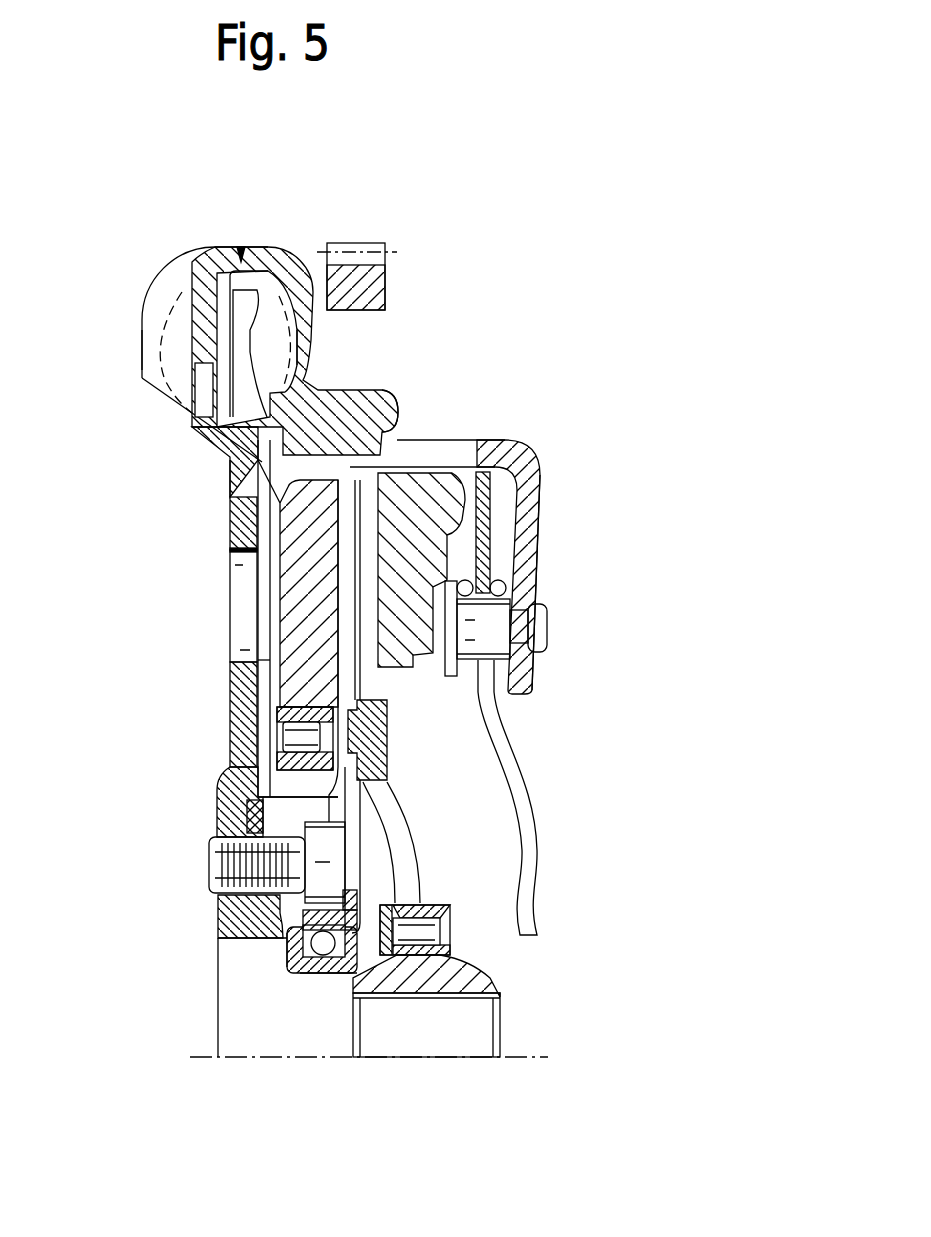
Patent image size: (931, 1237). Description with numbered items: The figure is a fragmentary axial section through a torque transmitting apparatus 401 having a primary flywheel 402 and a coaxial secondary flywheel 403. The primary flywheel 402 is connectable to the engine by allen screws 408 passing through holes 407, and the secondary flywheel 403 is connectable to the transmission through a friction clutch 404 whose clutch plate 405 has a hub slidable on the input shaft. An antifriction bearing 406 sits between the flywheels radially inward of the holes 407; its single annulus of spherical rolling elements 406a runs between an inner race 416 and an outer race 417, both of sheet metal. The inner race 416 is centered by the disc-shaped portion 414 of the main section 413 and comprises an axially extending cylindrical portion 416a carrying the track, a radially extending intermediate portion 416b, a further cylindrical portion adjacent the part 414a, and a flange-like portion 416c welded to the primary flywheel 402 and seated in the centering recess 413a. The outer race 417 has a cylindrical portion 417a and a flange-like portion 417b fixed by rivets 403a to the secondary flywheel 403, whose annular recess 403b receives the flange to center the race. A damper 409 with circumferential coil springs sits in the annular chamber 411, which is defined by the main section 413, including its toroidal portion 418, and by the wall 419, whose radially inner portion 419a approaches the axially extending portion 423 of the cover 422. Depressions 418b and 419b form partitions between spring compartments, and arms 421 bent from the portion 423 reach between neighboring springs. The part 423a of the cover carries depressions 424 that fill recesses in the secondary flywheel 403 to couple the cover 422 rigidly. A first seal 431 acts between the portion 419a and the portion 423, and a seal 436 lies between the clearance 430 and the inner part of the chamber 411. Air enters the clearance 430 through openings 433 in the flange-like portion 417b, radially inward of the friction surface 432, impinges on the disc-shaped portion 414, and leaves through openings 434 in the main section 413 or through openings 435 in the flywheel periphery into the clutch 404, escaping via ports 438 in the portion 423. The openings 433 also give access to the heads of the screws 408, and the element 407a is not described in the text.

The torque transmitting apparatus 401 is at (507, 141).
The primary flywheel 402 is at (200, 277).
The secondary flywheel 403 is at (295, 553).
The rivets 403a is at (300, 734).
The annular recess 403b is at (235, 664).
The friction clutch 404 is at (525, 585).
The clutch plate 405 is at (373, 772).
The antifriction bearing 406 is at (329, 992).
The spherical rolling elements 406a is at (335, 968).
The holes 407 is at (215, 857).
The hub base 407a is at (240, 918).
The allen screws 408 is at (208, 882).
The damper 409 is at (120, 325).
The annular chamber 411 is at (247, 283).
The main section 413 is at (240, 505).
The annular centering recess 413a is at (230, 783).
The disc-shaped portion 414 is at (243, 689).
The part of disc-shaped portion 414a is at (218, 940).
The inner race 416 is at (307, 972).
The axially extending cylindrical portion 416a is at (360, 985).
The radially extending intermediate portion 416b is at (287, 930).
The flange-like radially outwardly extending portion 416c is at (255, 818).
The outer race 417 is at (357, 920).
The axially extending cylindrical portion 417a is at (443, 905).
The flange-like portion 417b is at (345, 758).
The toroidal portion 418 is at (163, 293).
The depression 418b is at (177, 353).
The second section or wall 419 is at (390, 322).
The radially inner portion of the wall 419a is at (325, 352).
The depression 419b is at (338, 308).
The arms 421 is at (243, 373).
The housing or cover 422 is at (523, 510).
The axially extending portion 423 is at (490, 450).
The part of axially extending portion 423a is at (437, 412).
The depressions 424 is at (367, 393).
The clearance 430 is at (263, 567).
The first seal 431 is at (393, 413).
The friction surface 432 is at (340, 577).
The openings 433 is at (348, 813).
The openings 434 is at (245, 618).
The openings 435 is at (293, 477).
The seal 436 is at (225, 462).
The openings or ports 438 is at (467, 437).